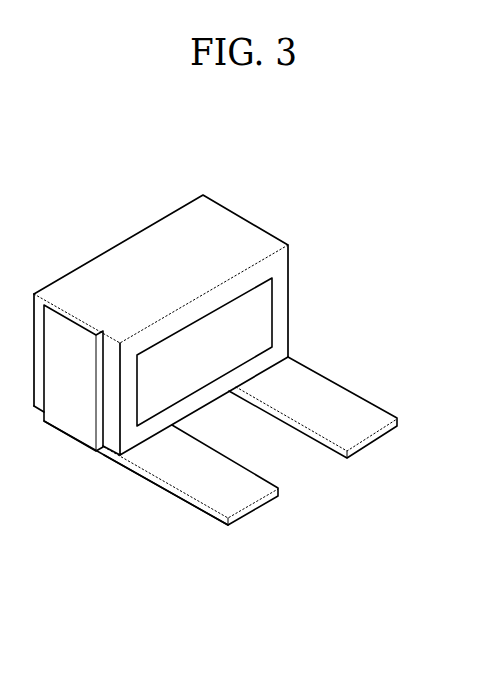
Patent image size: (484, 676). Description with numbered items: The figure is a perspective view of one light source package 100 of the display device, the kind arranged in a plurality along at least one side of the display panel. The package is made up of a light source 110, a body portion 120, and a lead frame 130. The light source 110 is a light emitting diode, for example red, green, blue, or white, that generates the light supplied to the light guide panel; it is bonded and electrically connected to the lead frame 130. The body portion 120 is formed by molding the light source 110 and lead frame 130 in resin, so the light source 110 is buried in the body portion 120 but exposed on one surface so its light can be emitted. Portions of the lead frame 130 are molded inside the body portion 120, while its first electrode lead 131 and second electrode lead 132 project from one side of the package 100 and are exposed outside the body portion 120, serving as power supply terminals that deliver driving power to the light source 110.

The light source package 100 is at (283, 195).
The light source 110 is at (255, 320).
The body portion 120 is at (280, 293).
The lead frame 130 is at (220, 540).
The first electrode lead 131 is at (237, 500).
The second electrode lead 132 is at (363, 430).